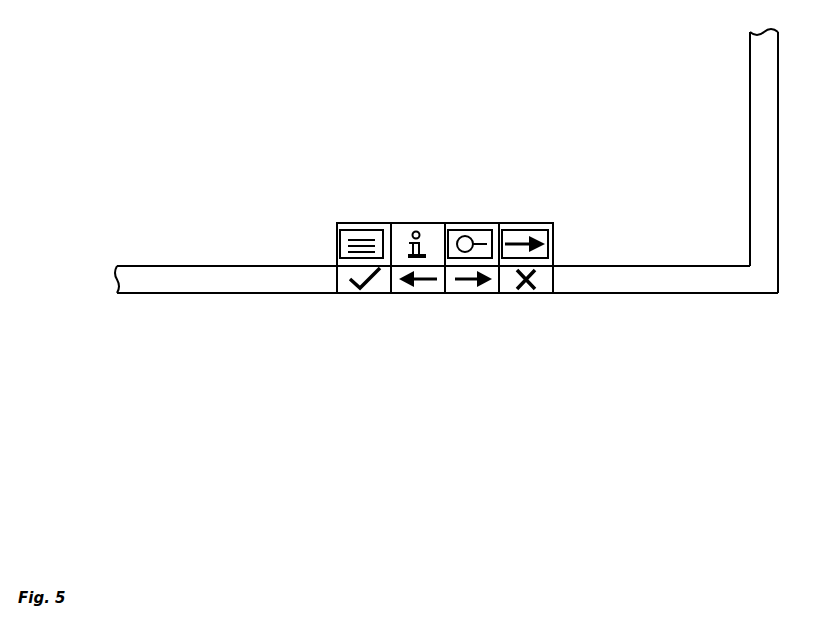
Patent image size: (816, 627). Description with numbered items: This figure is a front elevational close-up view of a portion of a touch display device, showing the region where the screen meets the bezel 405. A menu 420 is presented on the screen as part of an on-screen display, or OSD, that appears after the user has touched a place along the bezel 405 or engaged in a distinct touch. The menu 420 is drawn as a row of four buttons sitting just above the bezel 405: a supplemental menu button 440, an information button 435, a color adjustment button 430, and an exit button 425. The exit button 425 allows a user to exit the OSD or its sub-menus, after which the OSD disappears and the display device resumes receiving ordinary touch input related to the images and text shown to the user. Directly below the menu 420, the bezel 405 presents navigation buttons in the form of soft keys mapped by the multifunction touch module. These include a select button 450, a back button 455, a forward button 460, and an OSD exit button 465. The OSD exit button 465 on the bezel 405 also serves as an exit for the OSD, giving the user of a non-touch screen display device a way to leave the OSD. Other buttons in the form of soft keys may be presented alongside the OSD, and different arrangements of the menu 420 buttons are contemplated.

The bezel 405 is at (203, 280).
The menu 420 is at (560, 193).
The exit button 425 is at (553, 255).
The color adjustment button 430 is at (465, 226).
The information button 435 is at (432, 226).
The supplemental menu button 440 is at (338, 225).
The select button 450 is at (337, 282).
The back button 455 is at (405, 289).
The forward button 460 is at (473, 284).
The OSD exit button 465 is at (527, 286).